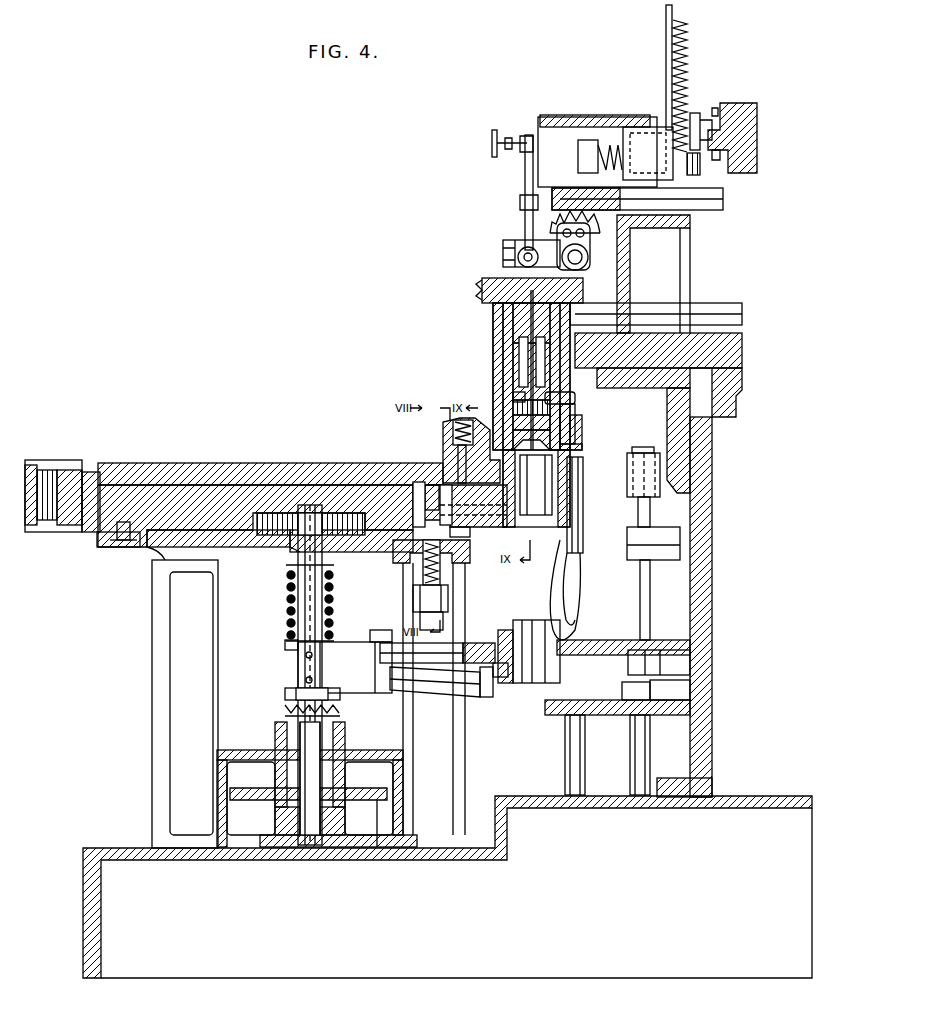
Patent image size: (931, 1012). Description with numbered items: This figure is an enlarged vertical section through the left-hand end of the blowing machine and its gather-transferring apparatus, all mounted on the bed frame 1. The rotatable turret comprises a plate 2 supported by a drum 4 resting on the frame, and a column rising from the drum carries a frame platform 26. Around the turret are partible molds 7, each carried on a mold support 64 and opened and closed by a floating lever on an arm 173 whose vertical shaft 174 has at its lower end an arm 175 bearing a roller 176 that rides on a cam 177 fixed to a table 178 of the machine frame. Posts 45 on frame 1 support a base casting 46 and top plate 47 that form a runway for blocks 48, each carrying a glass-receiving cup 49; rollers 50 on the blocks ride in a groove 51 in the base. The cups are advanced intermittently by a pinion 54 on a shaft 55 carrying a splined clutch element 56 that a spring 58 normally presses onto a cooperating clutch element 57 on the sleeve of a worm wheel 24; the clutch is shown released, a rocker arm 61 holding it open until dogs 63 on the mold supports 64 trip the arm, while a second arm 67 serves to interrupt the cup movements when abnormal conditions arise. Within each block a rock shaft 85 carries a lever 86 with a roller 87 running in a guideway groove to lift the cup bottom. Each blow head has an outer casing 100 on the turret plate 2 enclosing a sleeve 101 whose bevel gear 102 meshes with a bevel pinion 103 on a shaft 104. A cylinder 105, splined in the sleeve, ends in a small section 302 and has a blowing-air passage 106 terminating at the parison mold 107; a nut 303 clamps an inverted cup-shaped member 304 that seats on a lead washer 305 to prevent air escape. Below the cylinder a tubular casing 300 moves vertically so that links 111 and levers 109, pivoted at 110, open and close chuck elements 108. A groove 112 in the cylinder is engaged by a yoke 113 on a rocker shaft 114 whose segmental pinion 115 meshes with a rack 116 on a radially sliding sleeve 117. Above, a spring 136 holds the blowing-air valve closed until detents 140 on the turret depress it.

The bed frame 1 is at (745, 802).
The plate 2 is at (738, 362).
The drum 4 is at (712, 582).
The partible molds 7 is at (583, 490).
The worm wheel 24 is at (378, 848).
The frame platform 26 is at (748, 172).
The posts 45 is at (158, 650).
The base casting 46 is at (240, 545).
The top plate 47 is at (185, 464).
The blocks 48 is at (92, 480).
The glass-receiving cup 49 is at (572, 462).
The rollers 50 is at (97, 545).
The groove 51 is at (120, 545).
The pinion 54 is at (340, 512).
The shaft 55 is at (302, 508).
The clutch element 56 is at (285, 694).
The cooperating clutch element 57 is at (285, 714).
The spring 58 is at (287, 612).
The rocker arm 61 is at (428, 700).
The dogs 63 is at (508, 680).
The mold supports 64 is at (560, 683).
The arm 67 is at (345, 645).
The rock shaft 85 is at (455, 483).
The lever 86 is at (430, 495).
The roller 87 is at (420, 500).
The outer casing 100 is at (493, 344).
The sleeve 101 is at (503, 316).
The bevel gear 102 is at (490, 298).
The bevel pinion 103 is at (622, 285).
The shaft 104 is at (700, 308).
The cylinder 105 is at (513, 318).
The passage 106 is at (513, 328).
The parison mold 107 is at (578, 430).
The chuck elements 108 is at (513, 448).
The levers 109 is at (587, 443).
The pivot 110 is at (575, 414).
The links 111 is at (577, 397).
The groove 112 is at (505, 258).
The yoke 113 is at (527, 246).
The rocker shaft 114 is at (588, 248).
The segmental pinion 115 is at (598, 232).
The rack 116 is at (556, 185).
The sleeve 117 is at (566, 192).
The spring 136 is at (683, 55).
The detents 140 is at (694, 115).
The arm 173 is at (652, 528).
The shaft 174 is at (660, 510).
The arm 175 is at (690, 665).
The roller 176 is at (690, 688).
The cam 177 is at (625, 715).
The table 178 is at (680, 712).
The tubular casing 300 is at (515, 365).
The small section 302 is at (520, 350).
The nut 303 is at (520, 410).
The inverted cup-shaped member 304 is at (520, 418).
The lead washer 305 is at (515, 432).